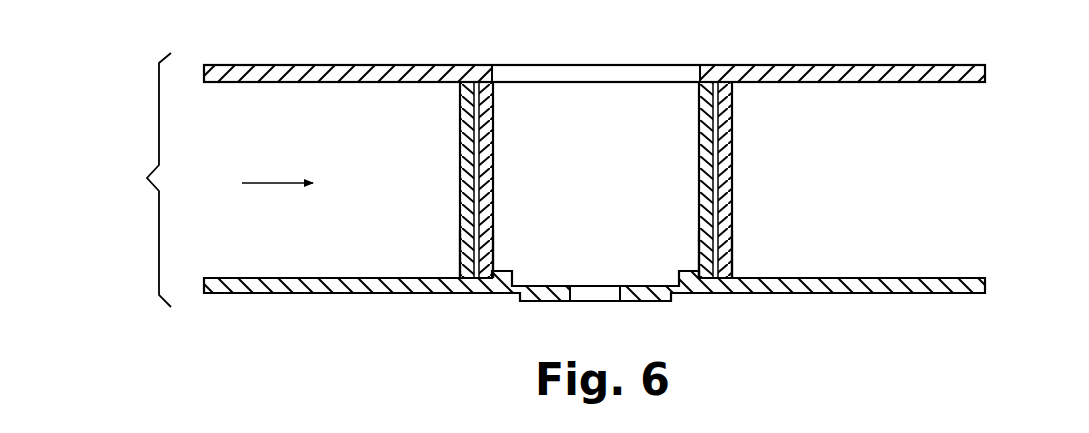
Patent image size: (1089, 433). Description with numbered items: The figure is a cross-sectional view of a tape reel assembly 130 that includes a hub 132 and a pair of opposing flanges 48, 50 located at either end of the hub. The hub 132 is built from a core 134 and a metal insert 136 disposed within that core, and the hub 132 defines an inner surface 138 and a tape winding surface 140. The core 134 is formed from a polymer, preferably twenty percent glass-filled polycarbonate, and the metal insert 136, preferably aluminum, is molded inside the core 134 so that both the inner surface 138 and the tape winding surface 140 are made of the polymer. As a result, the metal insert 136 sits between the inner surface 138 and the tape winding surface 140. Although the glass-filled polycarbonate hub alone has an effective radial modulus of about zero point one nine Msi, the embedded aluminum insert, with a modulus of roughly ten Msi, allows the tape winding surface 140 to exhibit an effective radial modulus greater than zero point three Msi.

The flange 48 is at (986, 72).
The flange 50 is at (986, 281).
The tape reel assembly 130 is at (134, 180).
The hub 132 is at (252, 183).
The core 134 is at (466, 131).
The metal insert 136 is at (473, 178).
The inner surface 138 is at (493, 107).
The tape winding surface 140 is at (460, 250).